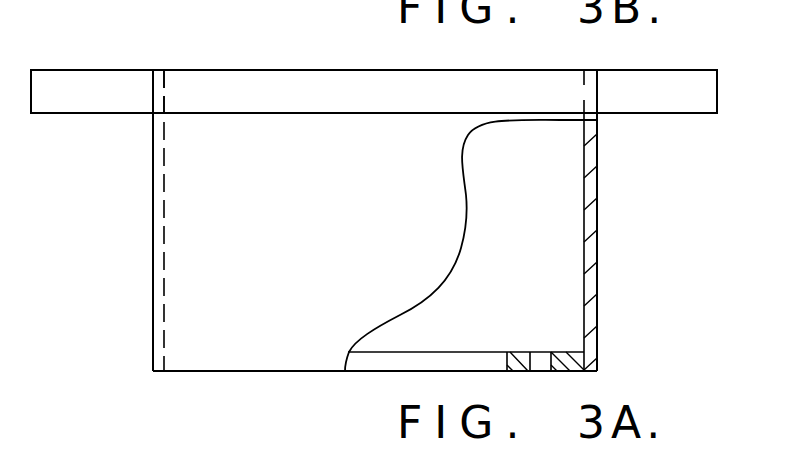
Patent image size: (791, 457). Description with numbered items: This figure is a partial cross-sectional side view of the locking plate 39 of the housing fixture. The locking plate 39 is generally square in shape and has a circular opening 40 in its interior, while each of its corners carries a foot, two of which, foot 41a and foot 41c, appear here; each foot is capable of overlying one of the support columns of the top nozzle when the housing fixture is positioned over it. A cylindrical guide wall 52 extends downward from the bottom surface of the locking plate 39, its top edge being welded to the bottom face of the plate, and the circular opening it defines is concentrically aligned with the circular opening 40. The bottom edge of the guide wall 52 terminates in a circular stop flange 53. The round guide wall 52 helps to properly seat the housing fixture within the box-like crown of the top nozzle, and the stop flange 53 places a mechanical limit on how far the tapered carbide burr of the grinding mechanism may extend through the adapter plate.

The locking plate 39 is at (73, 70).
The circular opening 40 is at (165, 97).
The foot 41a is at (65, 150).
The foot 41c is at (665, 92).
The cylindrical guide wall 52 is at (222, 279).
The circular stop flange 53 is at (522, 360).